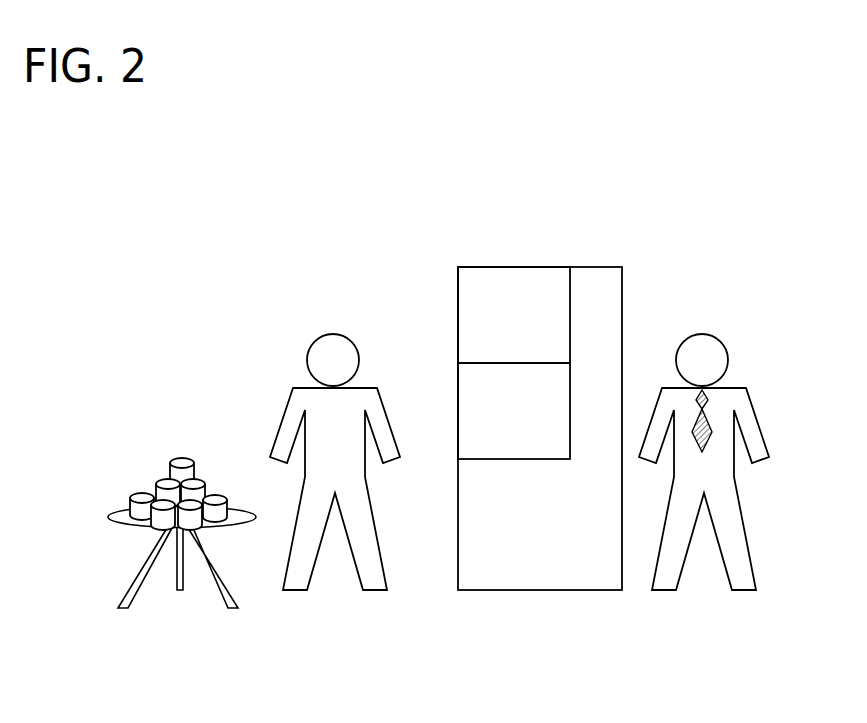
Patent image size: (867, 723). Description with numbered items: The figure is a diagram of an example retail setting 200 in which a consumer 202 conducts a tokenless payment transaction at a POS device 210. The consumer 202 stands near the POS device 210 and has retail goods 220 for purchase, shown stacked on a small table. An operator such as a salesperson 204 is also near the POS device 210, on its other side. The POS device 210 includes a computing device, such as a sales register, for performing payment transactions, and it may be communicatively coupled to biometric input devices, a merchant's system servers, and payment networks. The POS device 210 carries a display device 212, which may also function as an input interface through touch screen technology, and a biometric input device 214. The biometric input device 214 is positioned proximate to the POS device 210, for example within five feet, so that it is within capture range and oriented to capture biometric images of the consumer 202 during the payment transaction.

The retail setting 200 is at (247, 244).
The consumer 202 is at (292, 400).
The salesperson 204 is at (755, 413).
The POS device 210 is at (622, 303).
The display device 212 is at (482, 267).
The biometric input device 214 is at (482, 460).
The retail goods 220 is at (153, 464).